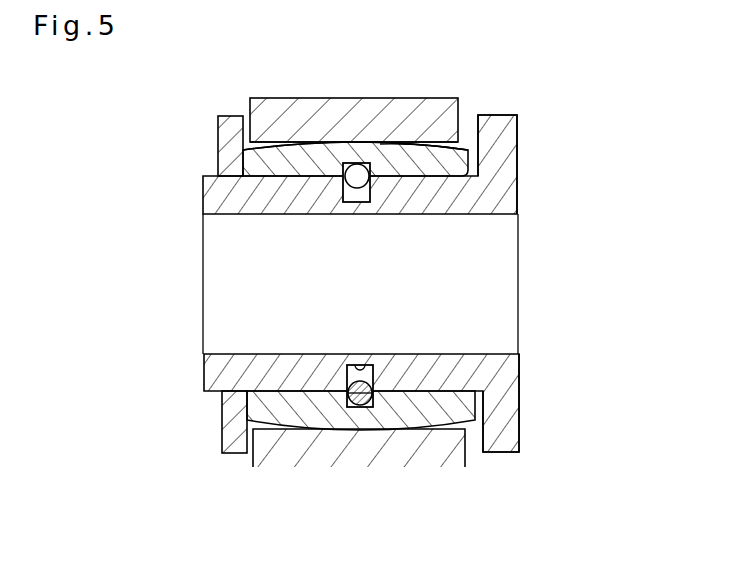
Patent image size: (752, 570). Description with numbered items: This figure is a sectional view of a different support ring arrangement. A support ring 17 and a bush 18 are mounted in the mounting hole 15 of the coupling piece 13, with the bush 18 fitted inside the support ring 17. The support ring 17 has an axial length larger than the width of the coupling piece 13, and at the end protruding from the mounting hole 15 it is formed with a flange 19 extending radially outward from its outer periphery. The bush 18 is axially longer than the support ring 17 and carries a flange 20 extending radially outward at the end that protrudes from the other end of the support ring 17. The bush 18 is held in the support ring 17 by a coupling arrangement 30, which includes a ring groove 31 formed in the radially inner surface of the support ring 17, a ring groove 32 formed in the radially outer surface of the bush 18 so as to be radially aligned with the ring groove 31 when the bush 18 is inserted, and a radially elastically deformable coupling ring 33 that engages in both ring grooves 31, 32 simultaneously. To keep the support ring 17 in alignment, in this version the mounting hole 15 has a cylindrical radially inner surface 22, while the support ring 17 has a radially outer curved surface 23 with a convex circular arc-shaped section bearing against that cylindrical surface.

The coupling piece 13 is at (302, 107).
The mounting hole 15 is at (264, 142).
The support ring 17 is at (435, 152).
The bush 18 is at (212, 196).
The flange 19 is at (218, 127).
The flange 20 is at (505, 133).
The cylindrical radially inner surface 22 is at (300, 146).
The radially outer curved surface 23 is at (412, 142).
The coupling arrangement 30 is at (352, 404).
The ring groove 31 is at (365, 406).
The ring groove 32 is at (372, 368).
The coupling ring 33 is at (353, 385).